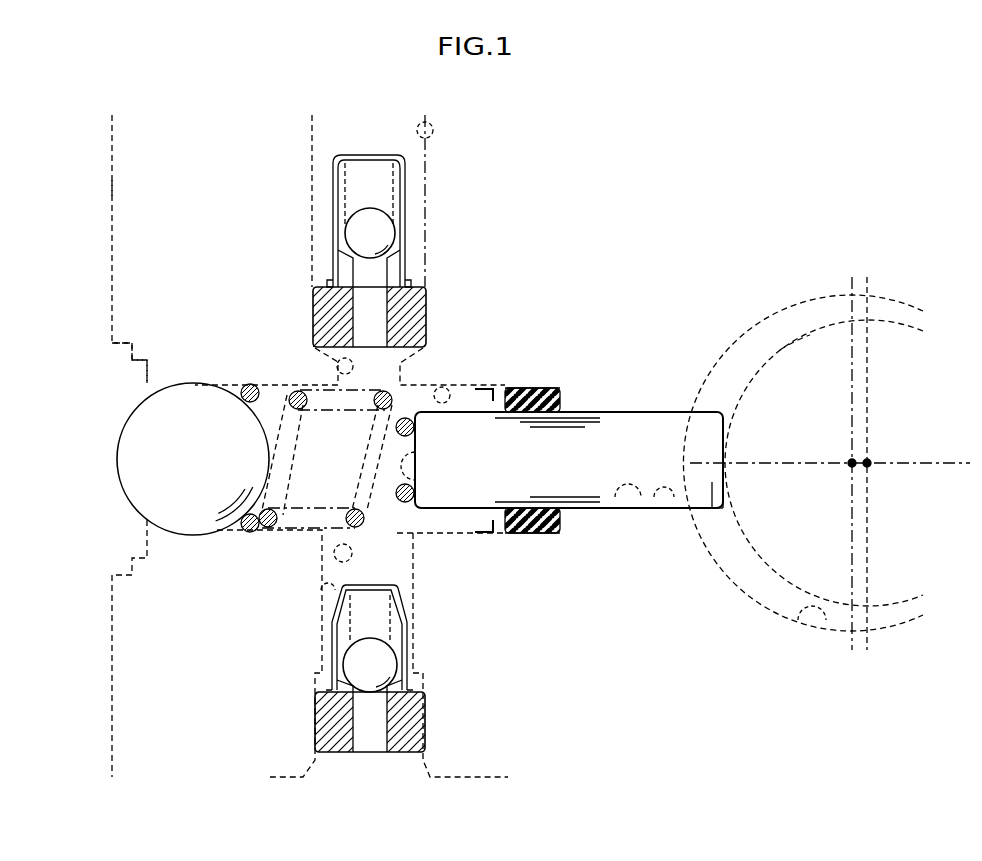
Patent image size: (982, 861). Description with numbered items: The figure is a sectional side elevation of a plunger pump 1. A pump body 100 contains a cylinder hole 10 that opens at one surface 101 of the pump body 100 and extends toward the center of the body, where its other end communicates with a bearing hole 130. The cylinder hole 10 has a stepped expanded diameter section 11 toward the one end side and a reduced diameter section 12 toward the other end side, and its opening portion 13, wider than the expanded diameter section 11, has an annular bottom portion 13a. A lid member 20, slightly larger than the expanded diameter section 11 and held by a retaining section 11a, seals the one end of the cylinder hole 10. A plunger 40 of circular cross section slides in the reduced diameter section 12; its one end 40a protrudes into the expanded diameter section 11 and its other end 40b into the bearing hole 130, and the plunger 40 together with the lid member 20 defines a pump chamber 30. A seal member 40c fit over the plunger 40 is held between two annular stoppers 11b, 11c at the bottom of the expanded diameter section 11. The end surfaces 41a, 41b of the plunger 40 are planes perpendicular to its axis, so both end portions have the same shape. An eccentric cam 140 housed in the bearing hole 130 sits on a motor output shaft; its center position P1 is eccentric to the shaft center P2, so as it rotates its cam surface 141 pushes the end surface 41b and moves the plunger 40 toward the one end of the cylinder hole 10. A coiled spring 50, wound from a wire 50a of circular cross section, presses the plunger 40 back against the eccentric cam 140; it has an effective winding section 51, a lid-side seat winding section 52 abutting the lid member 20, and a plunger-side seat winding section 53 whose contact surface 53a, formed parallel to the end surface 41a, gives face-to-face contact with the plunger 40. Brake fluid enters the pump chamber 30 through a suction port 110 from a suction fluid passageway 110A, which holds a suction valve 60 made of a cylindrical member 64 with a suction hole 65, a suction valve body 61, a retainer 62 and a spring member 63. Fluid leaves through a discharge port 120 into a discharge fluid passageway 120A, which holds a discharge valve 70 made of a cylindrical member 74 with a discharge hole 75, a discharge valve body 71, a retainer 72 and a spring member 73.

The plunger pump 1 is at (247, 210).
The pump body 100 is at (135, 168).
The one surface 101 is at (110, 190).
The opening portion 13 is at (112, 357).
The annular bottom portion 13a is at (112, 558).
The expanded diameter section 11 is at (444, 392).
The retaining section 11a is at (147, 380).
The annular stopper 11b is at (491, 389).
The annular stopper 11c is at (560, 392).
The cylinder hole 10 is at (612, 504).
The reduced diameter section 12 is at (668, 510).
The lid member 20 is at (140, 463).
The pump chamber 30 is at (334, 451).
The plunger 40 is at (683, 473).
The one end 40a is at (430, 460).
The other end 40b is at (708, 512).
The seal member 40c is at (532, 388).
The end surface 41a is at (412, 478).
The end surface 41b is at (723, 478).
The coiled spring 50 is at (398, 573).
The wire 50a is at (308, 522).
The effective winding section 51 is at (275, 535).
The lid-side seat winding section 52 is at (245, 518).
The plunger-side seat winding section 53 is at (368, 524).
The contact surface 53a is at (432, 500).
The suction valve 60 is at (395, 709).
The suction valve body 61 is at (387, 662).
The retainer 62 is at (407, 620).
The spring member 63 is at (392, 638).
The cylindrical member 64 is at (333, 735).
The suction hole 65 is at (365, 722).
The discharge valve 70 is at (415, 251).
The discharge valve body 71 is at (387, 233).
The retainer 72 is at (405, 170).
The spring member 73 is at (398, 185).
The cylindrical member 74 is at (425, 328).
The discharge hole 75 is at (372, 290).
The suction port 110 is at (332, 556).
The suction fluid passageway 110A is at (328, 598).
The discharge port 120 is at (335, 362).
The discharge fluid passageway 120A is at (433, 130).
The bearing hole 130 is at (822, 630).
The eccentric cam 140 is at (840, 330).
The cam surface 141 is at (797, 335).
The center position P1 is at (869, 463).
The shaft center P2 is at (850, 463).